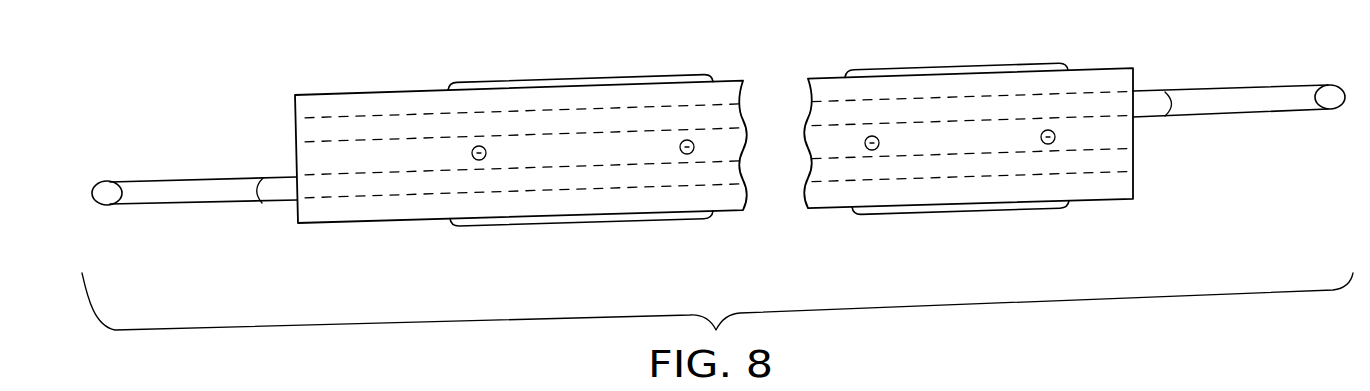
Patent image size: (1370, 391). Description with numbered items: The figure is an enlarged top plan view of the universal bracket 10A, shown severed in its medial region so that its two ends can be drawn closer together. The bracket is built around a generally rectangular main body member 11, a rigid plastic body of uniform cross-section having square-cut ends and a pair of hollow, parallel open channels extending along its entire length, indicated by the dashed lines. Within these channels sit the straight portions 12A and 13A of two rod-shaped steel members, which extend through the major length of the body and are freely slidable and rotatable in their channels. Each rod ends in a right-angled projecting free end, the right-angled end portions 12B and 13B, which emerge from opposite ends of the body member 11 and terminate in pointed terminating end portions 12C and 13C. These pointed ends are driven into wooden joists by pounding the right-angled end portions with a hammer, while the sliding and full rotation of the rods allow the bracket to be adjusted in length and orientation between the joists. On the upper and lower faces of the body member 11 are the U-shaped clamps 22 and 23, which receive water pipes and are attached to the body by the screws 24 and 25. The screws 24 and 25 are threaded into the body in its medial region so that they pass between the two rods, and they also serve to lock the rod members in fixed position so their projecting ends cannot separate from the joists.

The universal bracket 10A is at (728, 72).
The main body member 11 is at (325, 225).
The straight portion of rod-shaped member 12A is at (1087, 170).
The right-angled end portion 12B is at (1208, 85).
The pointed terminating end portion 12C is at (1340, 110).
The straight portion of rod-shaped member 13A is at (355, 132).
The right-angled end portion 13B is at (168, 178).
The pointed terminating end portion 13C is at (93, 198).
The U-shaped clamp 22 is at (535, 75).
The U-shaped clamp 23 is at (947, 65).
The screw 24 is at (474, 157).
The screw 25 is at (688, 156).